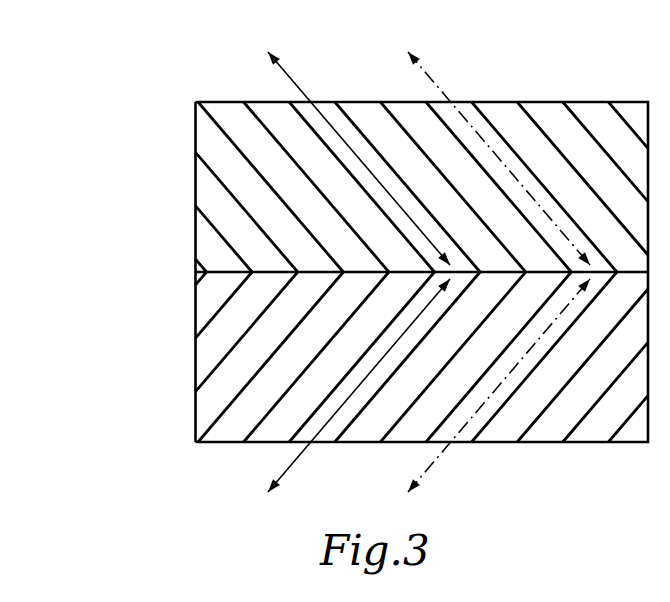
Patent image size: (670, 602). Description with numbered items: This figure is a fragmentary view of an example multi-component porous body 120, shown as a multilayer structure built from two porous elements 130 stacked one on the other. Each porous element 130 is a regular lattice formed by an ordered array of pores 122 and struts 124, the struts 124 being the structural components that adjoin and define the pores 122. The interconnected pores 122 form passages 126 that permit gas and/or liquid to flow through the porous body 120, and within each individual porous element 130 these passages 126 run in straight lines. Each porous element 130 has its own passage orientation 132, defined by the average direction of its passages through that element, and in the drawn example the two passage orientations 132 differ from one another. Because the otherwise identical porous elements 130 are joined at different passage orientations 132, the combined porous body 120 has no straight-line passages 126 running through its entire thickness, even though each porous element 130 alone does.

The porous body 120 is at (73, 134).
The pores 122 is at (232, 113).
The struts 124 is at (272, 126).
The passages 126 is at (337, 125).
The porous elements 130 is at (195, 190).
The passage orientation 132 is at (476, 133).